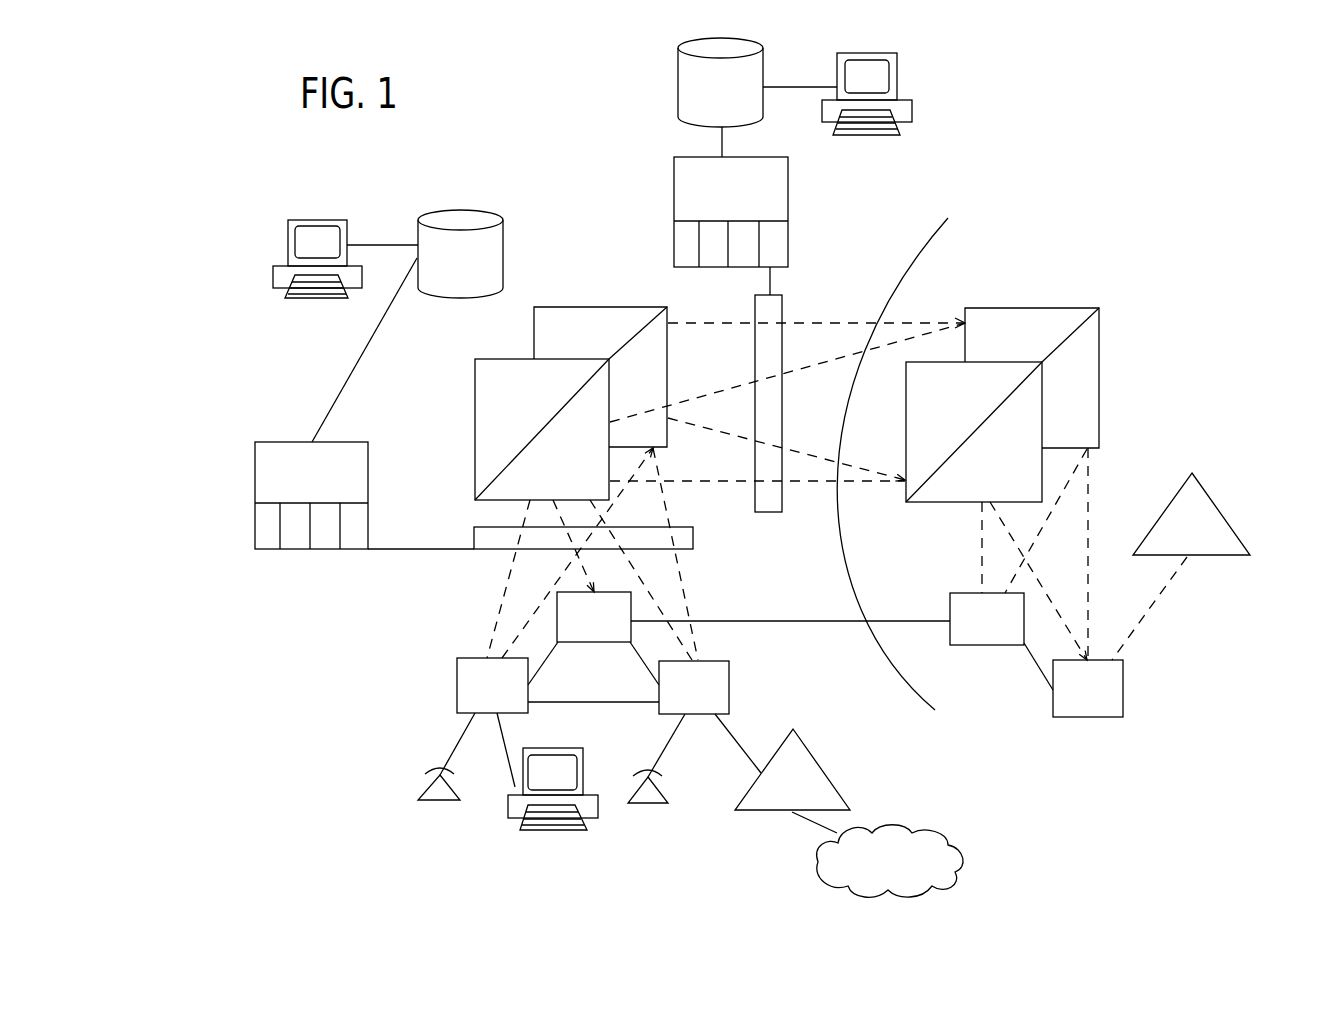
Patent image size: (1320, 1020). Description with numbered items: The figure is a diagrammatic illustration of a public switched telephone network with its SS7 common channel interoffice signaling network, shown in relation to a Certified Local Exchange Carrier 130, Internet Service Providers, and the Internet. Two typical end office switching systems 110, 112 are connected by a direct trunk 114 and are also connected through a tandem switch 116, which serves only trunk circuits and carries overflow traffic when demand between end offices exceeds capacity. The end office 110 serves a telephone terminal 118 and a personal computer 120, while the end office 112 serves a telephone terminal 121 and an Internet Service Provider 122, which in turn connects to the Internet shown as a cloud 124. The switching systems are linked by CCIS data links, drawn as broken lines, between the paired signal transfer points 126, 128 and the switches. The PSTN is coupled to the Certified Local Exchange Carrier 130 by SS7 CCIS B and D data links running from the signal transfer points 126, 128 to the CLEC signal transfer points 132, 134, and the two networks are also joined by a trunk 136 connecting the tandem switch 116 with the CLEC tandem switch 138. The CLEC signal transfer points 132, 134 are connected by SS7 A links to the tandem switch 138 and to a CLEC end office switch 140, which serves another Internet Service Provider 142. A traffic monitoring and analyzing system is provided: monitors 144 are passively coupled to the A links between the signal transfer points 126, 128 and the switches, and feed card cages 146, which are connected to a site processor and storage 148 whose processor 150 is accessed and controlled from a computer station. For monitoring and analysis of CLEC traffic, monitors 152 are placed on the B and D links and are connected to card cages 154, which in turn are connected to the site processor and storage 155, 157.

The end office switching system 110 is at (457, 682).
The end office switching system 112 is at (730, 686).
The direct trunk 114 is at (603, 705).
The tandem switch 116 is at (595, 642).
The telephone terminal 118 is at (441, 803).
The personal computer 120 is at (556, 830).
The telephone terminal 121 is at (650, 805).
The Internet Service Provider 122 is at (817, 765).
The Internet 124 is at (968, 857).
The signal transfer point 126 is at (474, 405).
The signal transfer point 128 is at (603, 306).
The Certified Local Exchange Carrier 130 is at (906, 251).
The CLEC signal transfer point 132 is at (906, 427).
The CLEC signal transfer point 134 is at (1073, 310).
The trunk 136 is at (788, 618).
The tandem switch 138 is at (967, 595).
The CLEC end office switch 140 is at (1095, 718).
The Internet Service Provider 142 is at (1222, 519).
The monitors 144 is at (694, 537).
The card cages 146 is at (255, 473).
The site processor and storage 148 is at (496, 214).
The processor 150 is at (320, 220).
The monitors 152 is at (755, 311).
The card cages 154 is at (676, 188).
The site processor and storage 155 is at (678, 77).
The site processor and storage 157 is at (898, 82).